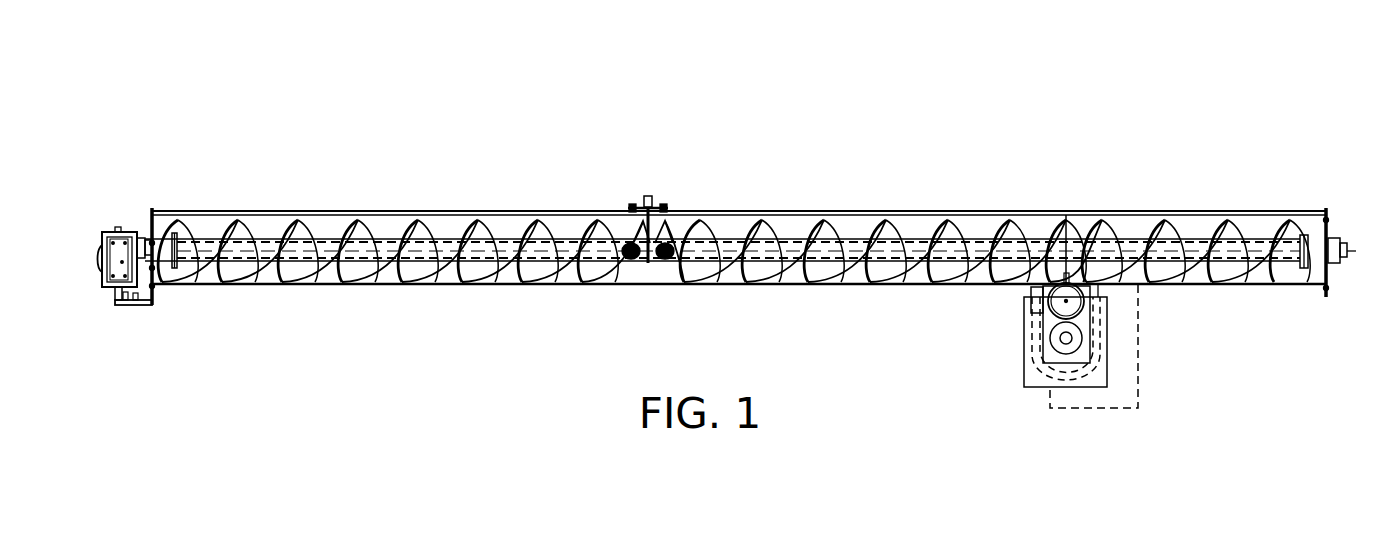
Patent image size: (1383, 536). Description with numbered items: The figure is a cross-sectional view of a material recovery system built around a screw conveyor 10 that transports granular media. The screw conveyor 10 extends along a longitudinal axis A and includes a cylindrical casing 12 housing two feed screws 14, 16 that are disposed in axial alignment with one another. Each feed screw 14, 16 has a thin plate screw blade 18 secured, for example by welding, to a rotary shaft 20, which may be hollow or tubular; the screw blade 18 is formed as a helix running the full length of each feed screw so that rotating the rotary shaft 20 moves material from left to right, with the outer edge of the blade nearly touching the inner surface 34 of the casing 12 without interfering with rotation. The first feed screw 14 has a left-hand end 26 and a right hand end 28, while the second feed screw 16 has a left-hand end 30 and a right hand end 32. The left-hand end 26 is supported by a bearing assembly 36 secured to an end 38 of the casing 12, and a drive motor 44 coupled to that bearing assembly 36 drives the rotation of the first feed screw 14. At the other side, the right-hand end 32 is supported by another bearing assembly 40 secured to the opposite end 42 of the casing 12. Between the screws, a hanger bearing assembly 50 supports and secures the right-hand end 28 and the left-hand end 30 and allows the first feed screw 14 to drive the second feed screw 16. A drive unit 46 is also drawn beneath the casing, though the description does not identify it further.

The screw conveyor 10 is at (1102, 148).
The cylindrical casing 12 is at (908, 285).
The feed screw 14 is at (318, 246).
The feed screw 16 is at (904, 247).
The screw blade 18 is at (440, 270).
The rotary shaft 20 is at (495, 259).
The left-hand end 26 is at (196, 246).
The right hand end 28 is at (612, 259).
The left-hand end 30 is at (705, 247).
The right hand end 32 is at (1258, 245).
The inner surface 34 is at (1050, 229).
The bearing assembly 36 is at (150, 223).
The end 38 is at (150, 300).
The bearing assembly 40 is at (1330, 267).
The opposite end 42 is at (1329, 220).
The drive motor 44 is at (101, 268).
The drive unit 46 is at (1081, 345).
The hanger bearing assembly 50 is at (636, 218).